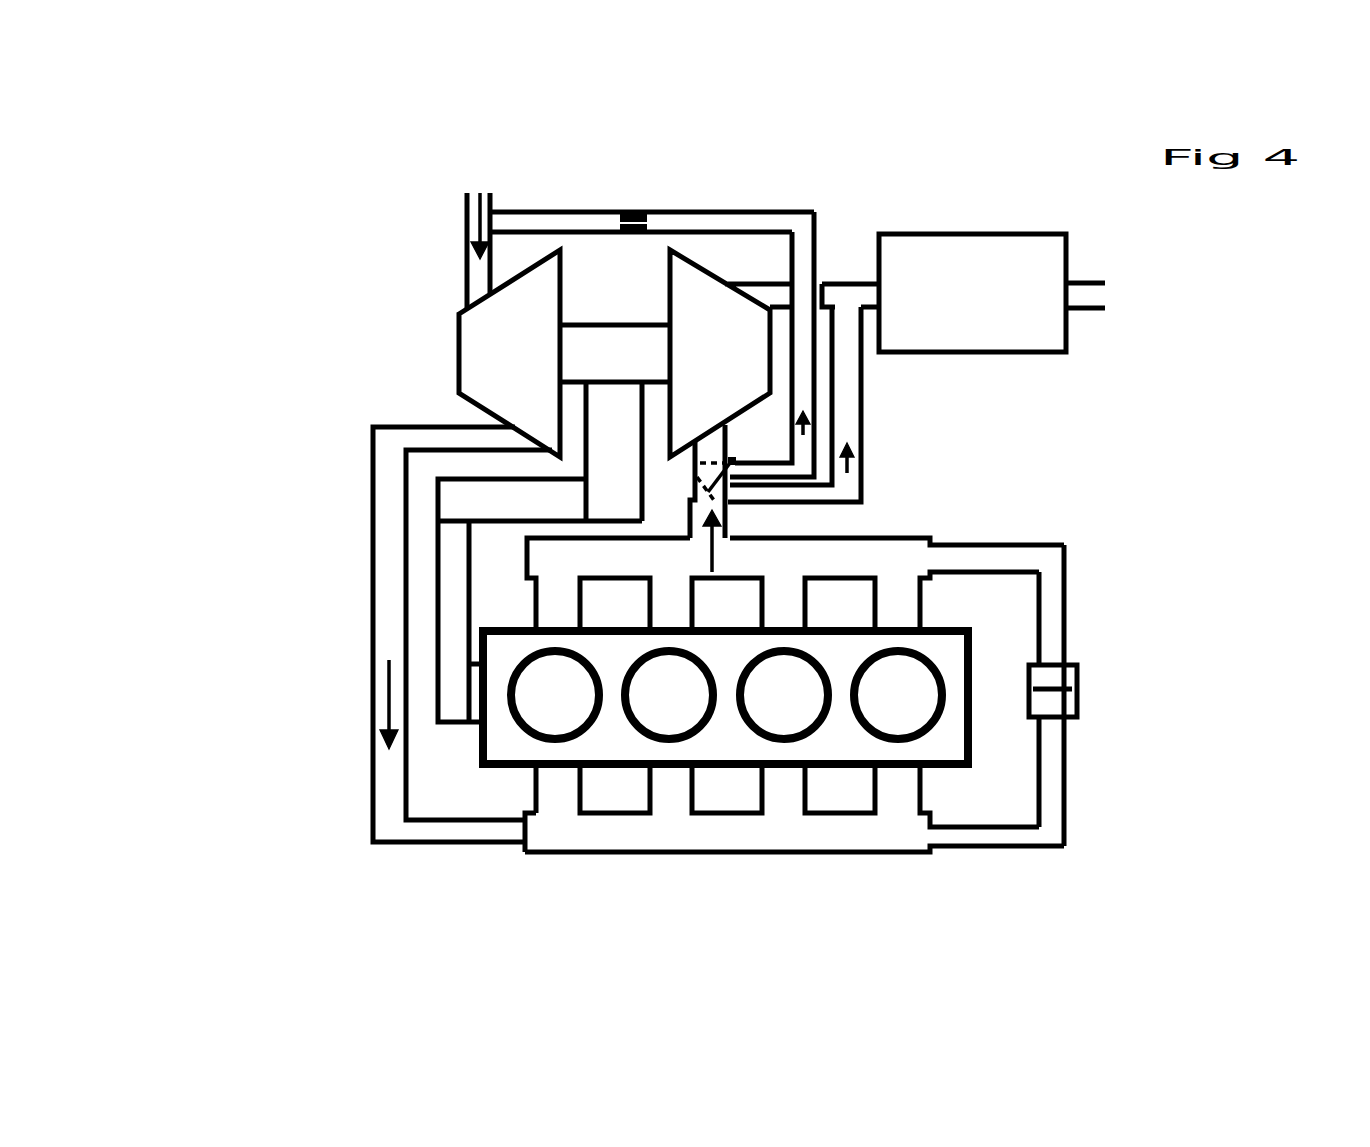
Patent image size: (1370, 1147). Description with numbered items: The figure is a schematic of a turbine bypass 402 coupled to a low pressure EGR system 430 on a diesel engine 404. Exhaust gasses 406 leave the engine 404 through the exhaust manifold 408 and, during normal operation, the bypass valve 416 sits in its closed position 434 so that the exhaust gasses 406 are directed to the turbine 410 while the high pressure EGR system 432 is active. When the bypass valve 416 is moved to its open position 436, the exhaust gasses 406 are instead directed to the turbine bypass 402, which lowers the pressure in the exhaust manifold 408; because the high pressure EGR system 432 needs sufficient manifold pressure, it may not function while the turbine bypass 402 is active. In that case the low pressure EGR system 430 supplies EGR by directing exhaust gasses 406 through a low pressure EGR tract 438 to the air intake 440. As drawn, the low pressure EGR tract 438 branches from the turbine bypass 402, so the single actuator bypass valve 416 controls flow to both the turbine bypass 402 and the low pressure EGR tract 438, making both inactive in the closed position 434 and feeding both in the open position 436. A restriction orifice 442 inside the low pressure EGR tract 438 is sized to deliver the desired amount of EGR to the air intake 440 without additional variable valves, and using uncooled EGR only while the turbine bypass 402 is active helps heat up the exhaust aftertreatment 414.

The turbine bypass 402 is at (885, 382).
The engine 404 is at (717, 742).
The exhaust gasses 406 is at (713, 557).
The exhaust manifold 408 is at (893, 587).
The turbine 410 is at (717, 315).
The exhaust aftertreatment 414 is at (972, 253).
The bypass valve 416 is at (716, 319).
The low pressure EGR system 430 is at (757, 200).
The high pressure EGR system 432 is at (1078, 760).
The closed position 434 is at (717, 468).
The open position 436 is at (700, 462).
The low pressure EGR tract 438 is at (570, 212).
The air intake 440 is at (465, 258).
The restriction orifice 442 is at (638, 210).